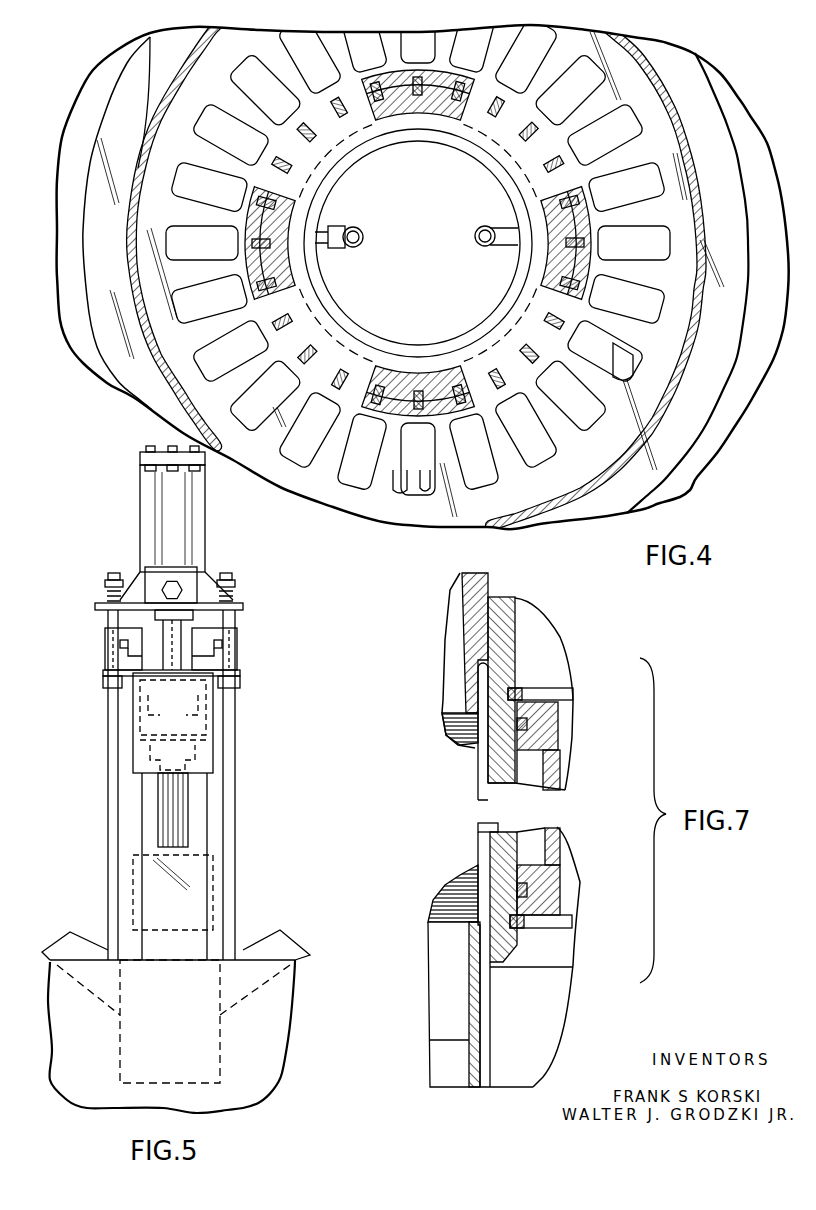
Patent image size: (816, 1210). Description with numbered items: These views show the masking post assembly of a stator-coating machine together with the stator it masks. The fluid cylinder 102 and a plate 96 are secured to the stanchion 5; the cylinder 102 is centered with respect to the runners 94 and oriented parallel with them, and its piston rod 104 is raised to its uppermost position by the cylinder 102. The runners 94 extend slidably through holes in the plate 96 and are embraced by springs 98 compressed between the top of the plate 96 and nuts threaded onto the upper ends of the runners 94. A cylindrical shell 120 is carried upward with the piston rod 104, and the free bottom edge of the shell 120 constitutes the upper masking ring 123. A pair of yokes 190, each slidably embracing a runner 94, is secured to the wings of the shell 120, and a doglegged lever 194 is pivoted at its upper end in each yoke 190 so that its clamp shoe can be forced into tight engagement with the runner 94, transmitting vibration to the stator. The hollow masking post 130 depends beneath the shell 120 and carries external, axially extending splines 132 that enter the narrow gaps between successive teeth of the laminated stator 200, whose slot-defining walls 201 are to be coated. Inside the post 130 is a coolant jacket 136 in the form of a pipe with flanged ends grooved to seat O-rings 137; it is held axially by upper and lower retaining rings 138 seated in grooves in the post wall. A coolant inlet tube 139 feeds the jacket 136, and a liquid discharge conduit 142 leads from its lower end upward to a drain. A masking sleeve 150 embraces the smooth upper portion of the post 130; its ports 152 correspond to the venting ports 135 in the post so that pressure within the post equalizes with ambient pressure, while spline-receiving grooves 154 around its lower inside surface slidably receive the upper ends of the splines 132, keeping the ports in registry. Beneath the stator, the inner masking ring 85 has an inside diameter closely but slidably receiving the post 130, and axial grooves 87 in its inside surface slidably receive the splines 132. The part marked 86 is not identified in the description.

In FIG. 4, the upper masking ring 123 is at (128, 112).
In FIG. 4, the masking post 130 is at (407, 83).
In FIG. 5, the masking post 130 is at (152, 810).
In FIG. 4, the splines 132 is at (492, 82).
In FIG. 5, the splines 132 is at (190, 820).
In FIG. 7, the splines 132 is at (482, 760).
In FIG. 4, the venting ports 135 is at (317, 147).
In FIG. 4, the coolant jacket 136 is at (357, 323).
In FIG. 7, the coolant jacket 136 is at (553, 768).
In FIG. 4, the coolant inlet tube 139 is at (487, 253).
In FIG. 4, the liquid discharge conduit 142 is at (357, 233).
In FIG. 4, the masking sleeve 150 is at (590, 213).
In FIG. 7, the masking sleeve 150 is at (467, 635).
In FIG. 4, the ports 152 is at (292, 113).
In FIG. 4, the spline-receiving grooves 154 is at (615, 155).
In FIG. 4, the slot-defining walls 201 is at (613, 377).
In FIG. 7, the slot-defining walls 201 is at (453, 890).
In FIG. 5, the stanchion 5 is at (140, 517).
In FIG. 5, the fluid cylinder 102 is at (177, 540).
In FIG. 5, the springs 98 is at (107, 597).
In FIG. 5, the plate 96 is at (243, 607).
In FIG. 5, the piston rod 104 is at (183, 637).
In FIG. 5, the yokes 190 is at (105, 653).
In FIG. 5, the doglegged lever 194 is at (110, 697).
In FIG. 5, the cylindrical shell 120 is at (133, 730).
In FIG. 5, the runners 94 is at (233, 747).
In FIG. 5, the laminated stator 200 is at (222, 1060).
In FIG. 7, the retaining rings 138 is at (522, 692).
In FIG. 7, the O-rings 137 is at (528, 723).
In FIG. 7, the inner masking ring 85 is at (462, 1010).
In FIG. 7, the axial grooves 87 is at (483, 1046).
In FIG. 7, the base plate 86 is at (447, 1075).